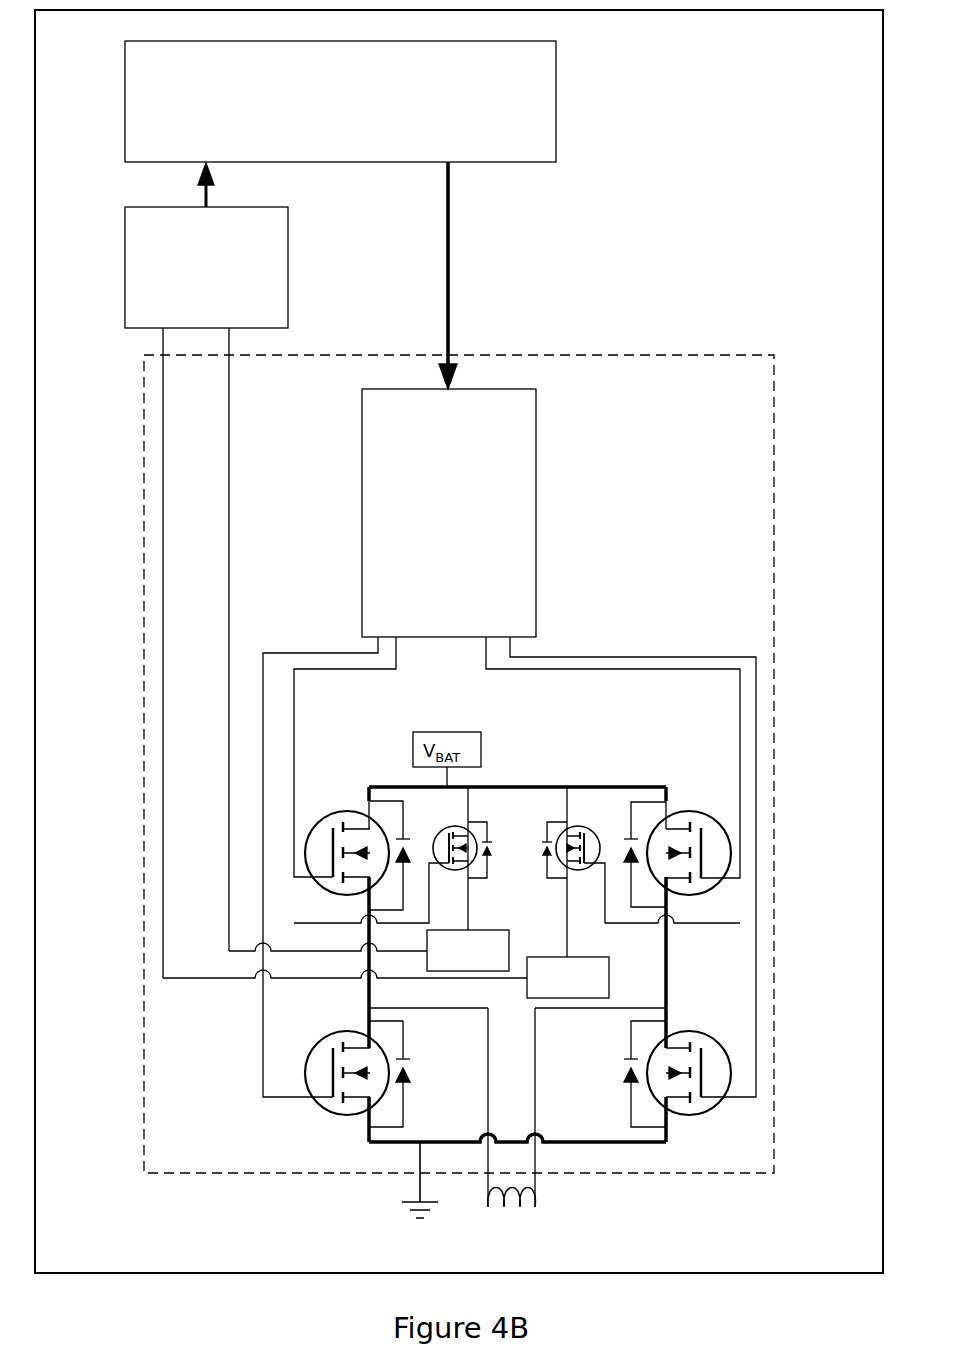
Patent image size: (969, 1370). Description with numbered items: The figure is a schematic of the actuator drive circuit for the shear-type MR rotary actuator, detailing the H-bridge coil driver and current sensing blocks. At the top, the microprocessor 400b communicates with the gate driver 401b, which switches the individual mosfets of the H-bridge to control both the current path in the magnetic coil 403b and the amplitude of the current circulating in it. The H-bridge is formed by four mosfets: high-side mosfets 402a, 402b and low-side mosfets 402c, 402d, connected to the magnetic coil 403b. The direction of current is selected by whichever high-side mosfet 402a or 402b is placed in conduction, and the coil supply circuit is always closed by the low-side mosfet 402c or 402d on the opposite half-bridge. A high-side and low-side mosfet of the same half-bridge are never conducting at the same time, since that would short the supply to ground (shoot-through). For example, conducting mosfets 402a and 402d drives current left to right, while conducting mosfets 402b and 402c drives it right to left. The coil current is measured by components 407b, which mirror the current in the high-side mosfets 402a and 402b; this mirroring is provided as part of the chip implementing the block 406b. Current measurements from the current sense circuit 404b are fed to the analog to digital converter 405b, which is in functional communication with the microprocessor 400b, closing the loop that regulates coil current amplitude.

The microprocessor 400b is at (556, 59).
The analog to digital converter 405b is at (125, 243).
The block 406b is at (691, 355).
The gate driver 401b is at (537, 438).
The high side mosfet 402a is at (340, 812).
The high side mosfet 402b is at (710, 815).
The low side mosfet 402c is at (322, 1108).
The low side mosfet 402d is at (717, 1105).
The current mirroring components 407b is at (576, 825).
The current sense circuit 404b is at (509, 932).
The magnetic coil 403b is at (537, 1188).